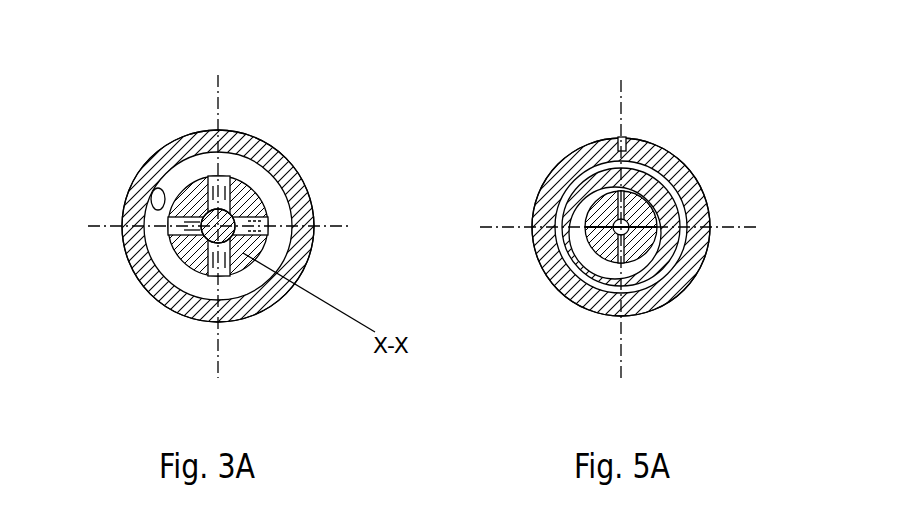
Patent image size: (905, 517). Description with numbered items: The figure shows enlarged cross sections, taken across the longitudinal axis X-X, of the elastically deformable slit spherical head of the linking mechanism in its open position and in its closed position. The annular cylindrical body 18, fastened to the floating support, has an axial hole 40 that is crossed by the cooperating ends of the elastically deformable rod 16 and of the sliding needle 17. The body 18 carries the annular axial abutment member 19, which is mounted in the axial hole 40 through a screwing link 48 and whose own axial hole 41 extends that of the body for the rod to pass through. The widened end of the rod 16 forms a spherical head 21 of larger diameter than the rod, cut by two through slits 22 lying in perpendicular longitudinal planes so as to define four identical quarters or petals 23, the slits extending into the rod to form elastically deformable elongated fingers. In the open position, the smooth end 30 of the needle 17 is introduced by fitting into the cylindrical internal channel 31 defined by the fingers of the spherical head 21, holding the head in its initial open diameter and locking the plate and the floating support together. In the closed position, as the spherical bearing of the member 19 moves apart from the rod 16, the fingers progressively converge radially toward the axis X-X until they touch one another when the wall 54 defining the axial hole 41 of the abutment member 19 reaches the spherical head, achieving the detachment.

In FIG. 3A, the elastically deformable rod 16 is at (298, 152).
In FIG. 5A, the elastically deformable rod 16 is at (667, 193).
In FIG. 3A, the sliding needle 17 is at (185, 226).
In FIG. 3A, the annular cylindrical body 18 is at (150, 134).
In FIG. 5A, the annular cylindrical body 18 is at (526, 172).
In FIG. 3A, the annular axial abutment member 19 is at (296, 248).
In FIG. 5A, the annular axial abutment member 19 is at (636, 134).
In FIG. 3A, the spherical head 21 is at (204, 182).
In FIG. 5A, the spherical head 21 is at (652, 165).
In FIG. 3A, the through slits 22 is at (226, 178).
In FIG. 3A, the quarters or petals 23 is at (172, 290).
In FIG. 5A, the quarters or petals 23 is at (567, 160).
In FIG. 3A, the smooth end 30 is at (237, 278).
In FIG. 3A, the cylindrical internal channel 31 is at (178, 243).
In FIG. 5A, the cylindrical internal channel 31 is at (675, 288).
In FIG. 3A, the axial hole 40 is at (128, 198).
In FIG. 3A, the axial hole 41 is at (268, 176).
In FIG. 5A, the axial hole 41 is at (550, 285).
In FIG. 5A, the screwing link 48 is at (687, 250).
In FIG. 5A, the wall 54 is at (590, 312).